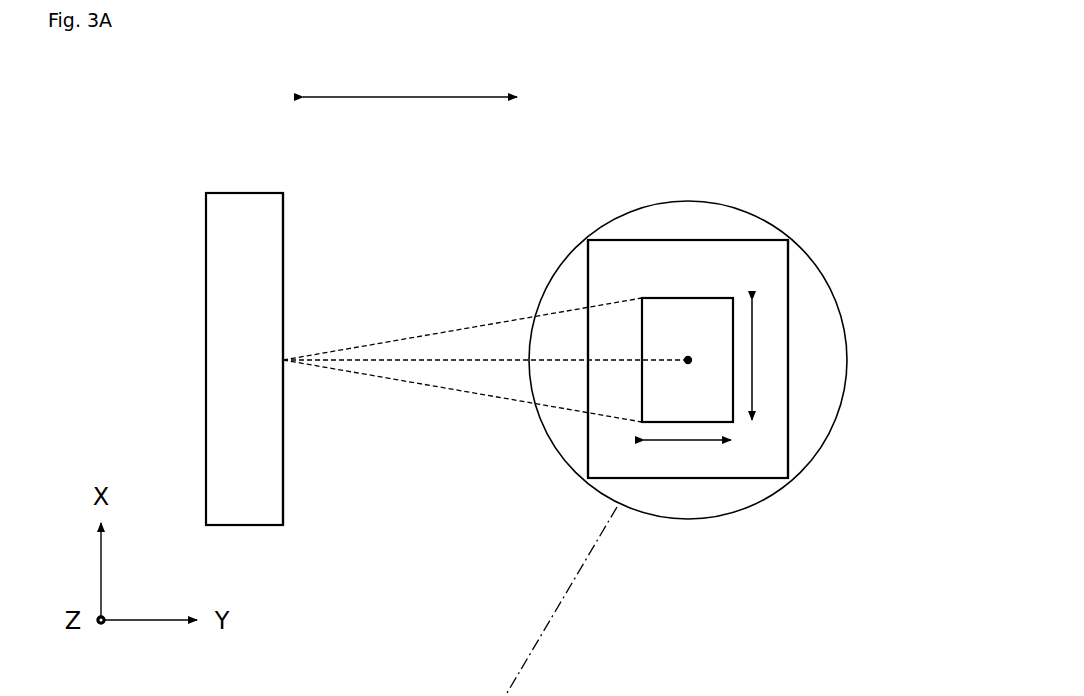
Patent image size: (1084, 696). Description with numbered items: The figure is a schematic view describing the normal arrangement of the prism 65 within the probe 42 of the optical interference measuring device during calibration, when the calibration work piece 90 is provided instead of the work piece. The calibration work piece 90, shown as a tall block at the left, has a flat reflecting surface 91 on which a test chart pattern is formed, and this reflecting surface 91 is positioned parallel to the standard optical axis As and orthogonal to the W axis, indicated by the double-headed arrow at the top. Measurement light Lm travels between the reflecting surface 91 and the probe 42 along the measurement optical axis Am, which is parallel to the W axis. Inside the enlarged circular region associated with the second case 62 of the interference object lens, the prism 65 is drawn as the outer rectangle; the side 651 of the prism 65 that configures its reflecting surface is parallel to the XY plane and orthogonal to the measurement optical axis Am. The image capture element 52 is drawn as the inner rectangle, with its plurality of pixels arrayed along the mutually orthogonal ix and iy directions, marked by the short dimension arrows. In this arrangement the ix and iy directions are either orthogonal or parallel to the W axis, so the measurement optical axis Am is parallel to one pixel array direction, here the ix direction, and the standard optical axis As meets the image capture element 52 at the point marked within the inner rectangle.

The probe 42 is at (887, 202).
The image capture element 52 is at (657, 298).
The second case 62 is at (697, 519).
The prism 65 is at (727, 240).
The side 651 is at (586, 476).
The calibration work piece 90 is at (241, 193).
The reflecting surface 91 is at (283, 243).
The W axis W is at (401, 97).
The measurement light Lm is at (432, 334).
The measurement optical axis Am is at (462, 391).
The standard optical axis As is at (688, 360).
The ix direction ix is at (687, 458).
The iy direction iy is at (768, 360).